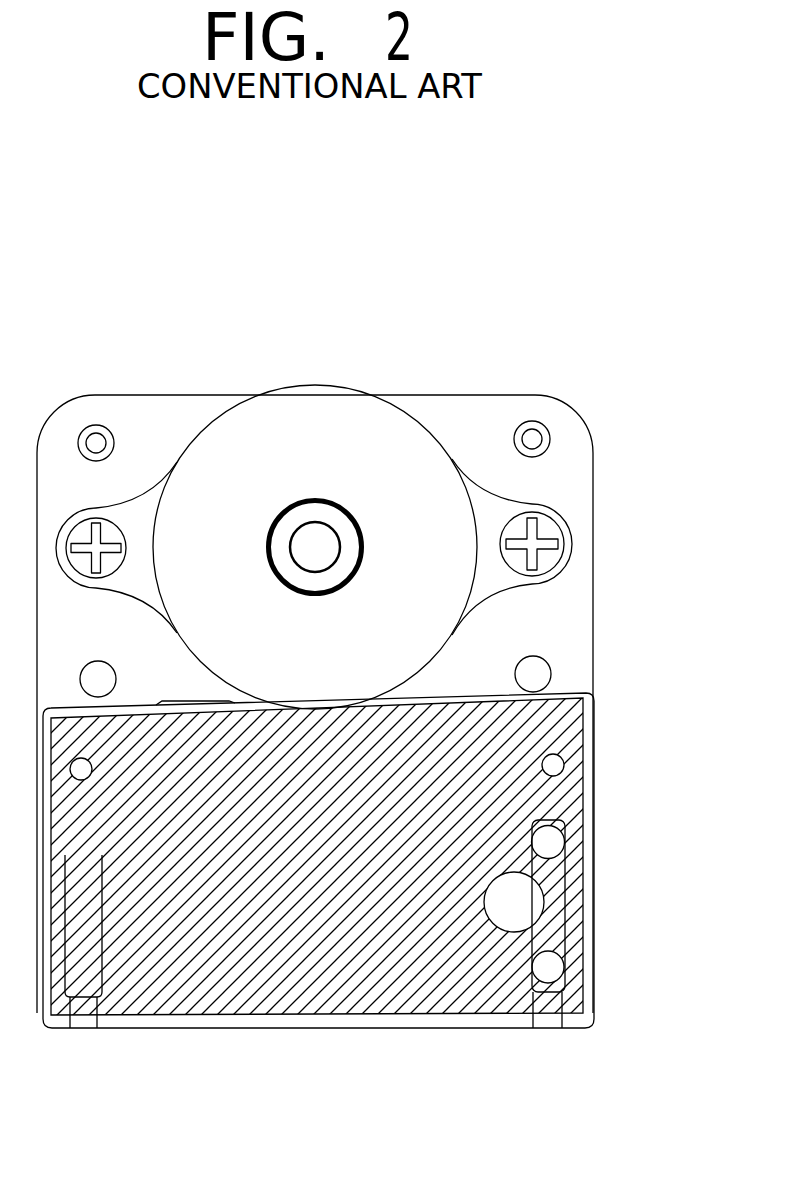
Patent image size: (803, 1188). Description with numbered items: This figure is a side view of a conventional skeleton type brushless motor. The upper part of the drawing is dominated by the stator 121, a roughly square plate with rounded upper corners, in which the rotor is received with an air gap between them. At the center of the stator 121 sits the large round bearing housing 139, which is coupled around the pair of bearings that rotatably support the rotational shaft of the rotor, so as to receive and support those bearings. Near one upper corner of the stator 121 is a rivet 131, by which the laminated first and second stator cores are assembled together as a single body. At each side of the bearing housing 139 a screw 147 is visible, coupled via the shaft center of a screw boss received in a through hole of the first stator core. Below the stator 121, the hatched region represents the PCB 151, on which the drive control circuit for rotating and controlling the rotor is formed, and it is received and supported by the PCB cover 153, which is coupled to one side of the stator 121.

The stator 121 is at (183, 427).
The bearing housing 139 is at (329, 427).
The rivet 131 is at (535, 439).
The screw 147 is at (553, 527).
The PCB 151 is at (553, 793).
The PCB cover 153 is at (592, 898).